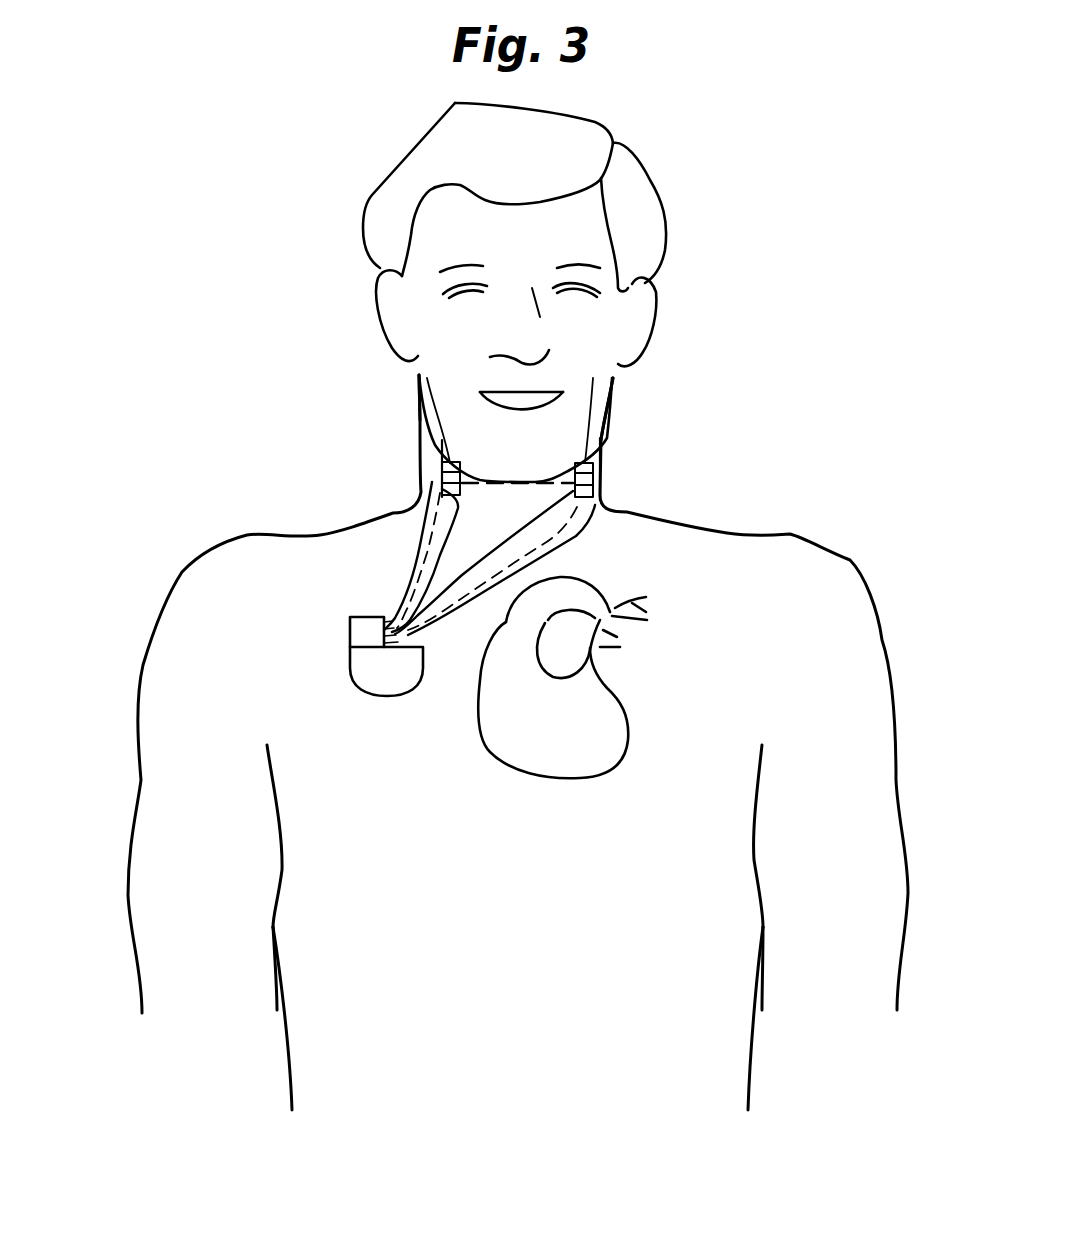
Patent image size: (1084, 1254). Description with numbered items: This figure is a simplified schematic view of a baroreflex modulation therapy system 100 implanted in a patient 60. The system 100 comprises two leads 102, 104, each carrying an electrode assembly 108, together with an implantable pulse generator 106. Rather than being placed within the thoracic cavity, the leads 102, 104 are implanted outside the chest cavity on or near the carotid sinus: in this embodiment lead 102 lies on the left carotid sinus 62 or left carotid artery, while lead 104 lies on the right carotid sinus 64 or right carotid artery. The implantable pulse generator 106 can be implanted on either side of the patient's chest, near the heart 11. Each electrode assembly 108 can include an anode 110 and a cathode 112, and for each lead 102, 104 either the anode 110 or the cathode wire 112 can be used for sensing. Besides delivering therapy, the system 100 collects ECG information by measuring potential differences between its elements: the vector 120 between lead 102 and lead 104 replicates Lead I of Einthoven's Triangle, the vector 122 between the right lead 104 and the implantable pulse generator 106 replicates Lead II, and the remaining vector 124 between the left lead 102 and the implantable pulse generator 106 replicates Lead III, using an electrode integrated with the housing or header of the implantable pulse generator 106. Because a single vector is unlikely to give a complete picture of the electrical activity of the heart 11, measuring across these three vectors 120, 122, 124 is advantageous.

The heart 11 is at (617, 748).
The patient 60 is at (837, 547).
The left carotid sinus 62 is at (600, 475).
The right carotid sinus 64 is at (422, 455).
The baroreflex modulation therapy system 100 is at (452, 527).
The lead 102 is at (617, 563).
The lead 104 is at (351, 553).
The implantable pulse generator 106 is at (367, 670).
The electrode assembly 108 is at (425, 466).
The anode 110 is at (437, 469).
The cathode 112 is at (428, 398).
The lead-lead vector 120 is at (522, 483).
The right lead-IPG vector 122 is at (540, 545).
The measurement vector 124 is at (420, 503).